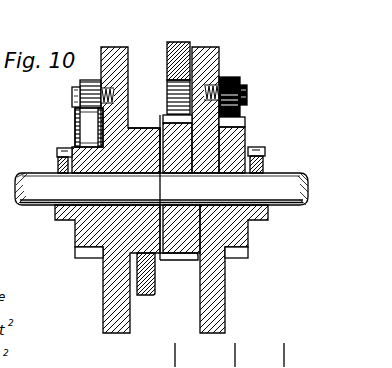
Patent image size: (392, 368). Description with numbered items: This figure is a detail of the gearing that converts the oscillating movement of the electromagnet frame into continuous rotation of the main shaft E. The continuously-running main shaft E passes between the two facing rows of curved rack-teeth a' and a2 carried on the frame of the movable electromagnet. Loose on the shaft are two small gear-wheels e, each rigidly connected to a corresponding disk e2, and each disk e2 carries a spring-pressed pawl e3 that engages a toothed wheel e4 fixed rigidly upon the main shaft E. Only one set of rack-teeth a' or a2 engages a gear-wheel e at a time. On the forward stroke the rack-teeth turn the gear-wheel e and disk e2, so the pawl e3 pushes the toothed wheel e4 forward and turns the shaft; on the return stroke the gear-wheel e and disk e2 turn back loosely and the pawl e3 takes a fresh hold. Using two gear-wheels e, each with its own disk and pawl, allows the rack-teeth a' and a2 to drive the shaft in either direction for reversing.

The main shaft E is at (292, 178).
The disk e2 is at (216, 35).
The gear-wheel e is at (145, 127).
The rack-teeth a2 is at (178, 47).
The spring-pressed pawl e3 is at (259, 106).
The toothed wheel e4 is at (244, 137).
The rack-teeth a' is at (155, 283).